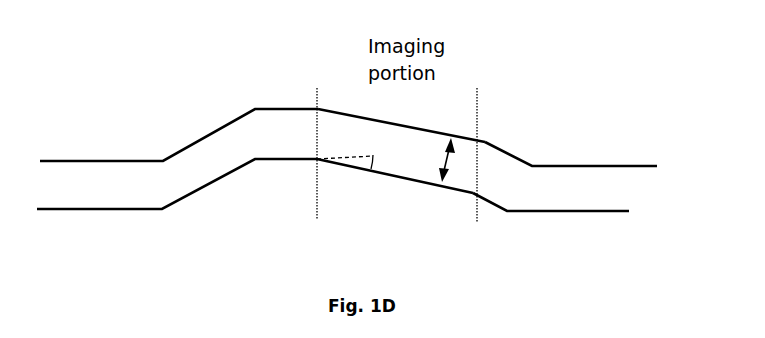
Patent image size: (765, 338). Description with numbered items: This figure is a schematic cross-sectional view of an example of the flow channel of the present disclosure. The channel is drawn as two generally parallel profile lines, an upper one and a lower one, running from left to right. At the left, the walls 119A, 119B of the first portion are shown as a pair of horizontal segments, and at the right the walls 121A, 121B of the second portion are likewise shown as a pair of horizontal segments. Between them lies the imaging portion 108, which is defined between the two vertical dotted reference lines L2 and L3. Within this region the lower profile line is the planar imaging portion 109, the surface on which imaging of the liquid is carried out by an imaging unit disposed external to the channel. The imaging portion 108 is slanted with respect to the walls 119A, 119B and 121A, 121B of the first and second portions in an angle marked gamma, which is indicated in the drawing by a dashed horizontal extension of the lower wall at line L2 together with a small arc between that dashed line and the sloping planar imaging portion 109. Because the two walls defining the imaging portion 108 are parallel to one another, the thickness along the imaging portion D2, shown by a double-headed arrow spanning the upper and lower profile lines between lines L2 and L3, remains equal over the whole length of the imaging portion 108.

The wall of the first portion 119A is at (98, 160).
The wall of the first portion 119B is at (110, 210).
The imaging portion 108 is at (403, 127).
The planar imaging portion 109 is at (411, 180).
The wall of the second portion 121A is at (607, 164).
The wall of the second portion 121B is at (565, 212).
The line L2 is at (318, 139).
The line L3 is at (477, 142).
The thickness along the imaging portion D2 is at (436, 160).